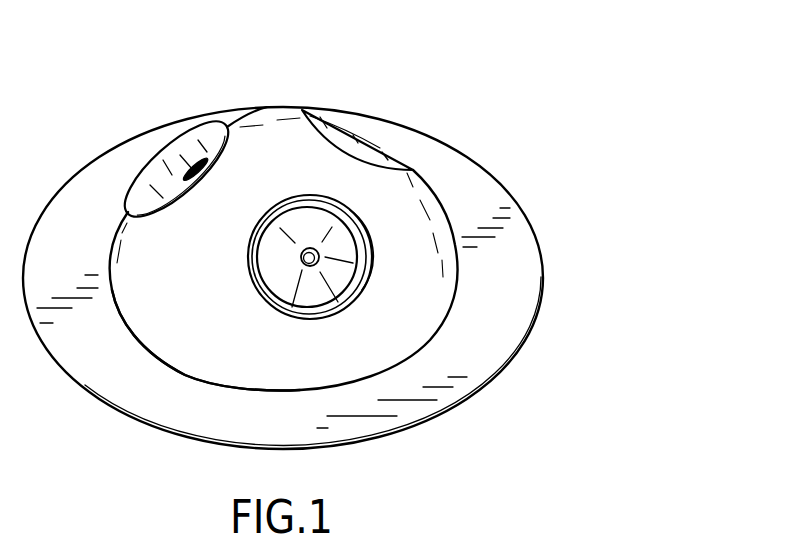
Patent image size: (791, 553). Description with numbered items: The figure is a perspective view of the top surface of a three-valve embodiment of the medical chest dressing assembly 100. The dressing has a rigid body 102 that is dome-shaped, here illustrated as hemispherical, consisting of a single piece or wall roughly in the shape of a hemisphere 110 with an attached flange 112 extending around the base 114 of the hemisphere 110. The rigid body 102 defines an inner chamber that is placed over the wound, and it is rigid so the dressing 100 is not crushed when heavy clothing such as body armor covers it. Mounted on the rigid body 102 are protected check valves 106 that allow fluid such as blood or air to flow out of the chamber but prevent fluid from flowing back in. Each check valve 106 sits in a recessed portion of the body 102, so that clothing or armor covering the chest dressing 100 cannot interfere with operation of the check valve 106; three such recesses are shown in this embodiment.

The chest dressing assembly 100 is at (567, 123).
The rigid body 102 is at (513, 193).
The check valve 106 is at (343, 280).
The hemisphere 110 is at (268, 147).
The flange 112 is at (520, 298).
The base 114 is at (185, 372).